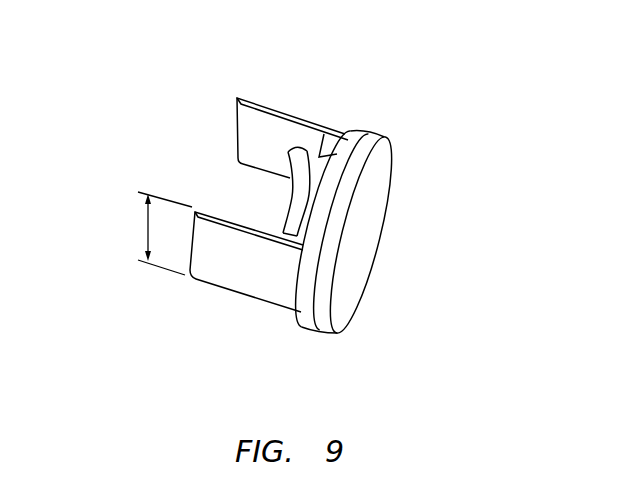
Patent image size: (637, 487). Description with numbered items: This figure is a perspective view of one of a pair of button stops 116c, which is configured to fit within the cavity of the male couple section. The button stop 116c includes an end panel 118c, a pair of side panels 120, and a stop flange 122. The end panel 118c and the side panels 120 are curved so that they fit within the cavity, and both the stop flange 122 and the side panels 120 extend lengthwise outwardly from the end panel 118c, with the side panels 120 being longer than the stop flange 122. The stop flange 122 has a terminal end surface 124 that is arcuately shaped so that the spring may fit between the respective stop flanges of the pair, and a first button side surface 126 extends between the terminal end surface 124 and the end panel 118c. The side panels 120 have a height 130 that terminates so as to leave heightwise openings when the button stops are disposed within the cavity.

The button stop 116c is at (281, 186).
The end panel 118c is at (355, 282).
The side panels 120 is at (260, 124).
The stop flange 122 is at (318, 146).
The terminal end surface 124 is at (291, 208).
The first button side surface 126 is at (300, 234).
The height 130 is at (147, 231).